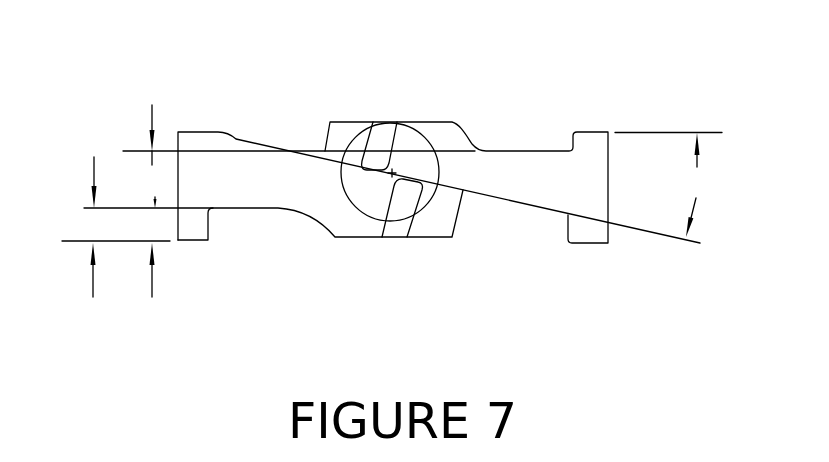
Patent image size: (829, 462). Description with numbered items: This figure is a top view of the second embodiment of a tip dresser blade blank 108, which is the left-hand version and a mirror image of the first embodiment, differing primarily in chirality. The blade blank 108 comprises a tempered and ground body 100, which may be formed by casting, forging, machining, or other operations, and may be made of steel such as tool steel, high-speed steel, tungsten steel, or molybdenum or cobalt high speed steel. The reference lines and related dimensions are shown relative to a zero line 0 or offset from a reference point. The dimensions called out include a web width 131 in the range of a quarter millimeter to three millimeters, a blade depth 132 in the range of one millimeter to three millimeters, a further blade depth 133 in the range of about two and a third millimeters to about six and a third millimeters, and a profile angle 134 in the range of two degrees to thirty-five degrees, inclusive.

The body 100 is at (357, 287).
The second tip dresser blade blank 108 is at (412, 285).
The zero line 0 is at (109, 263).
The web width 131 is at (150, 189).
The blade depth 132 is at (94, 168).
The blade depth 133 is at (153, 122).
The profile angle 134 is at (668, 185).